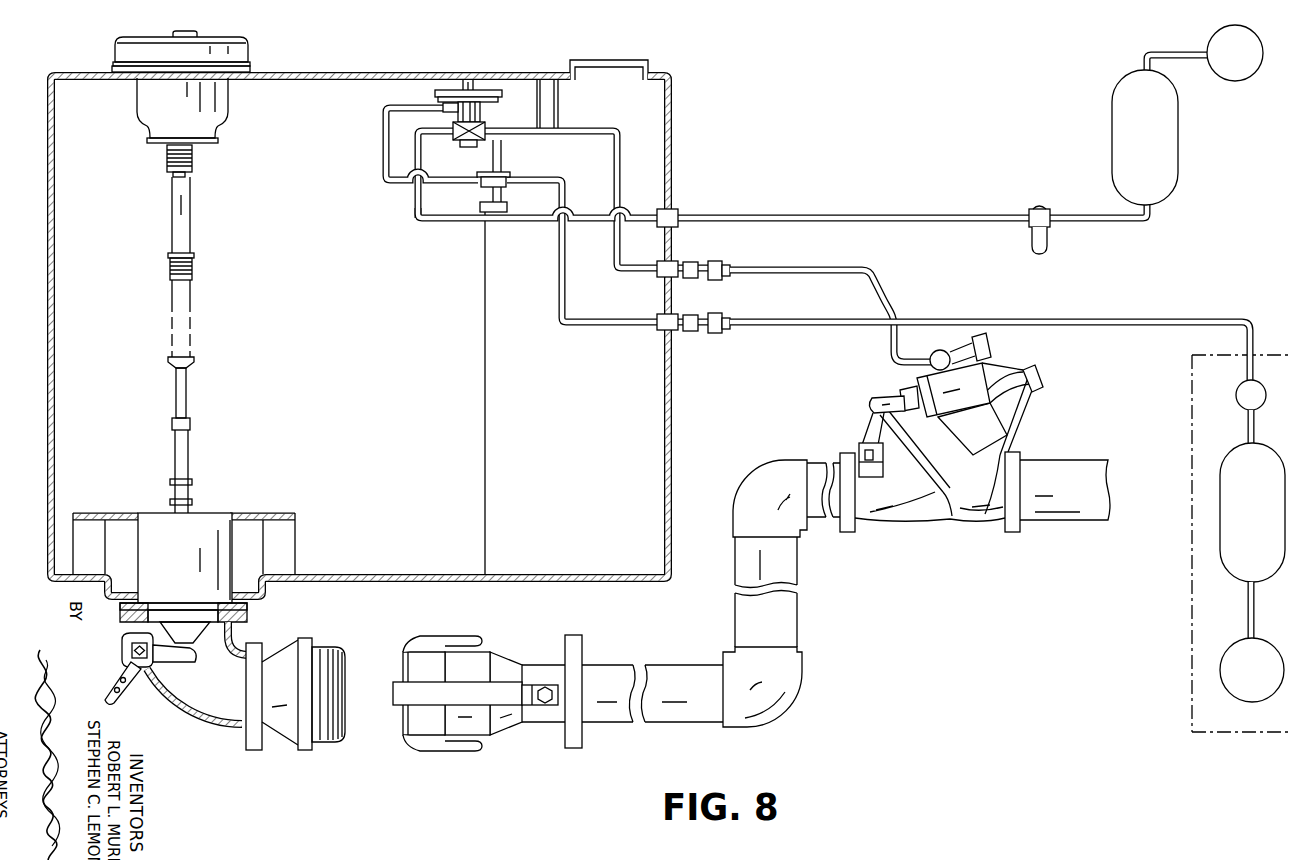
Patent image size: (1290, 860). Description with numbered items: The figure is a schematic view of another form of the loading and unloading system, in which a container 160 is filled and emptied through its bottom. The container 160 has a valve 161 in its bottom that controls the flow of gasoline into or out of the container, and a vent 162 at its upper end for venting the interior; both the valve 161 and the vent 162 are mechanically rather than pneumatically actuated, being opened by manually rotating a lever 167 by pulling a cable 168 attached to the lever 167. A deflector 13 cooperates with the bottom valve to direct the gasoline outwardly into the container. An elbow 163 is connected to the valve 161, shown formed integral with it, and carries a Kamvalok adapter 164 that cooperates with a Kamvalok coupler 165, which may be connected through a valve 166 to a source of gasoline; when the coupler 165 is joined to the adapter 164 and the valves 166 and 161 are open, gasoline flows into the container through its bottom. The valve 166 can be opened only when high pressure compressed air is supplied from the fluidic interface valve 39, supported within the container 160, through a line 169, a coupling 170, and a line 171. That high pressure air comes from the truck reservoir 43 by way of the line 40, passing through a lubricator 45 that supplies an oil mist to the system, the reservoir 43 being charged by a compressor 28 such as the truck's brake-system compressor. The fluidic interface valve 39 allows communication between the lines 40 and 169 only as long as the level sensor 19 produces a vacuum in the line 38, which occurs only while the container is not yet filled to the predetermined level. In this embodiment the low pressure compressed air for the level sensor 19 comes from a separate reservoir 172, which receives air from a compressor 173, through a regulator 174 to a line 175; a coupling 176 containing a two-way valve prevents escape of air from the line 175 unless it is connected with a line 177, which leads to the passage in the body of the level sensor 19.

The deflector 13 is at (292, 513).
The level sensor 19 is at (510, 170).
The compressor 28 is at (1238, 81).
The line 38 is at (382, 162).
The fluidic interface valve 39 is at (486, 86).
The line 40 is at (938, 215).
The reservoir 43 is at (1113, 123).
The lubricator 45 is at (1050, 246).
The container 160 is at (678, 116).
The valve 161 is at (234, 536).
The vent 162 is at (232, 118).
The elbow 163 is at (223, 730).
The Kamvalok adapter 164 is at (305, 755).
The Kamvalok coupler 165 is at (501, 740).
The valve 166 is at (925, 537).
The lever 167 is at (110, 678).
The cable 168 is at (152, 693).
The line 169 is at (590, 127).
The coupling 170 is at (711, 250).
The line 171 is at (851, 267).
The reservoir 172 is at (1220, 548).
The compressor 173 is at (1220, 672).
The regulator 174 is at (1237, 398).
The line 175 is at (1157, 314).
The coupling 176 is at (711, 306).
The line 177 is at (609, 328).